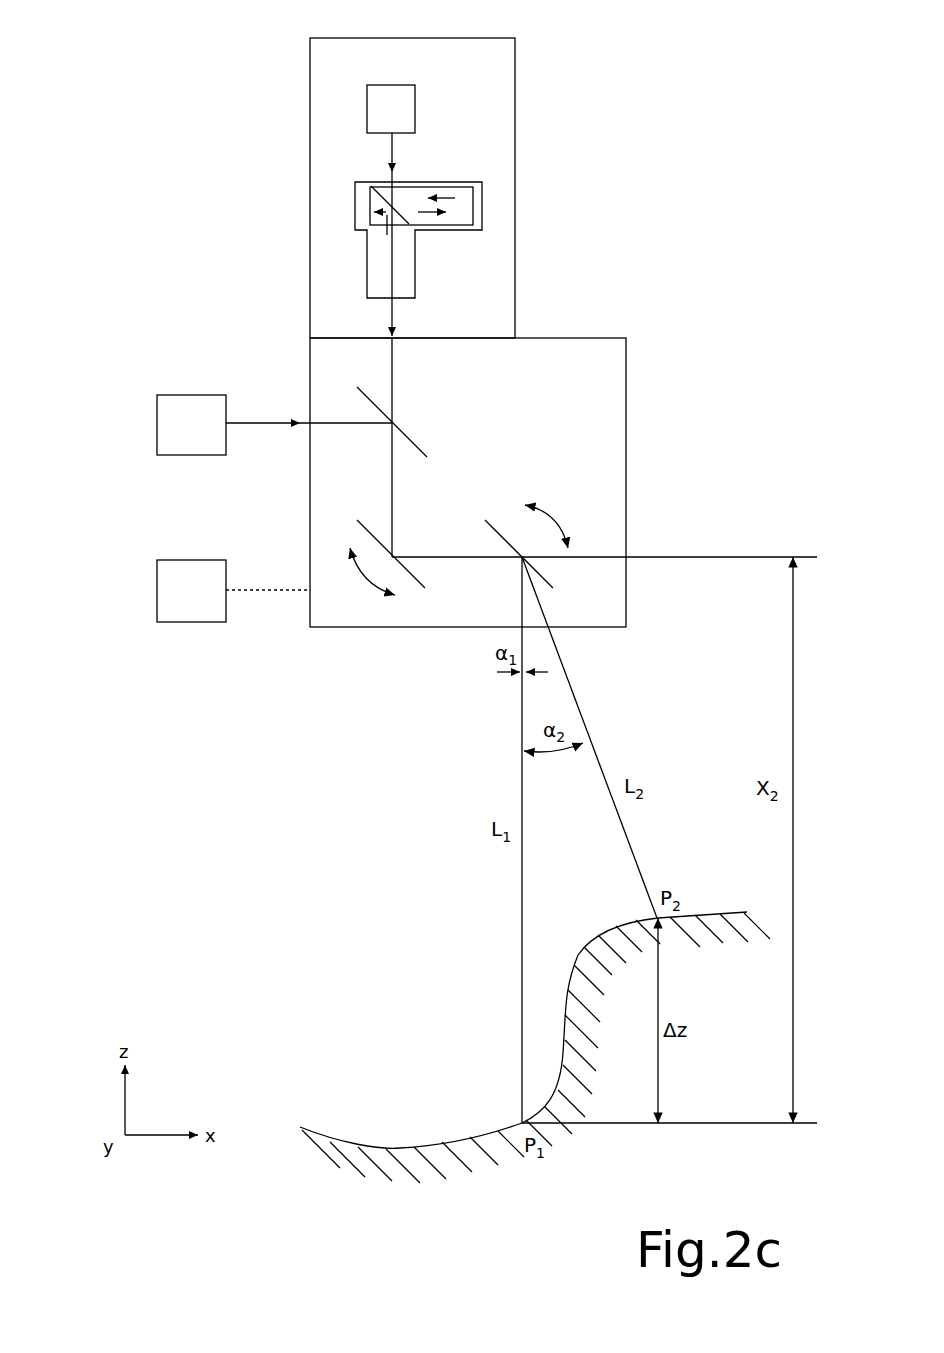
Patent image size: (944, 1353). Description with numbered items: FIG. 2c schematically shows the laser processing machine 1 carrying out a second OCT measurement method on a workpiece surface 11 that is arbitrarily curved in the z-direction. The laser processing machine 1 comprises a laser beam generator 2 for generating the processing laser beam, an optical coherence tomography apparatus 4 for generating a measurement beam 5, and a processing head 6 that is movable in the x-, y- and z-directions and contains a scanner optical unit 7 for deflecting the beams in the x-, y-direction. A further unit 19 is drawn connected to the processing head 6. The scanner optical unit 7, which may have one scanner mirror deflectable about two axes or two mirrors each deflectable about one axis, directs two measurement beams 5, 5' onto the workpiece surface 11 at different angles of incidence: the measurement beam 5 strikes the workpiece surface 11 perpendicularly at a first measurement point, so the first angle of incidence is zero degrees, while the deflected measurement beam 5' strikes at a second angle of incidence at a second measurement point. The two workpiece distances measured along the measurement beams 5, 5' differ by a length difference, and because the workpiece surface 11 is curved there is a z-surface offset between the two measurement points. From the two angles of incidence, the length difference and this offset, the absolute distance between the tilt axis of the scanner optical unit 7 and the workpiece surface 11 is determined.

The laser processing machine 1 is at (447, 577).
The laser beam generator 2 is at (170, 428).
The optical coherence tomography (OCT) apparatus 4 is at (518, 78).
The measurement beam 5 is at (535, 717).
The measurement beam 5' is at (594, 737).
The processing head 6 is at (596, 336).
The scanner optical unit 7 is at (545, 582).
The workpiece surface 11 is at (386, 1142).
The control unit 19 is at (172, 600).